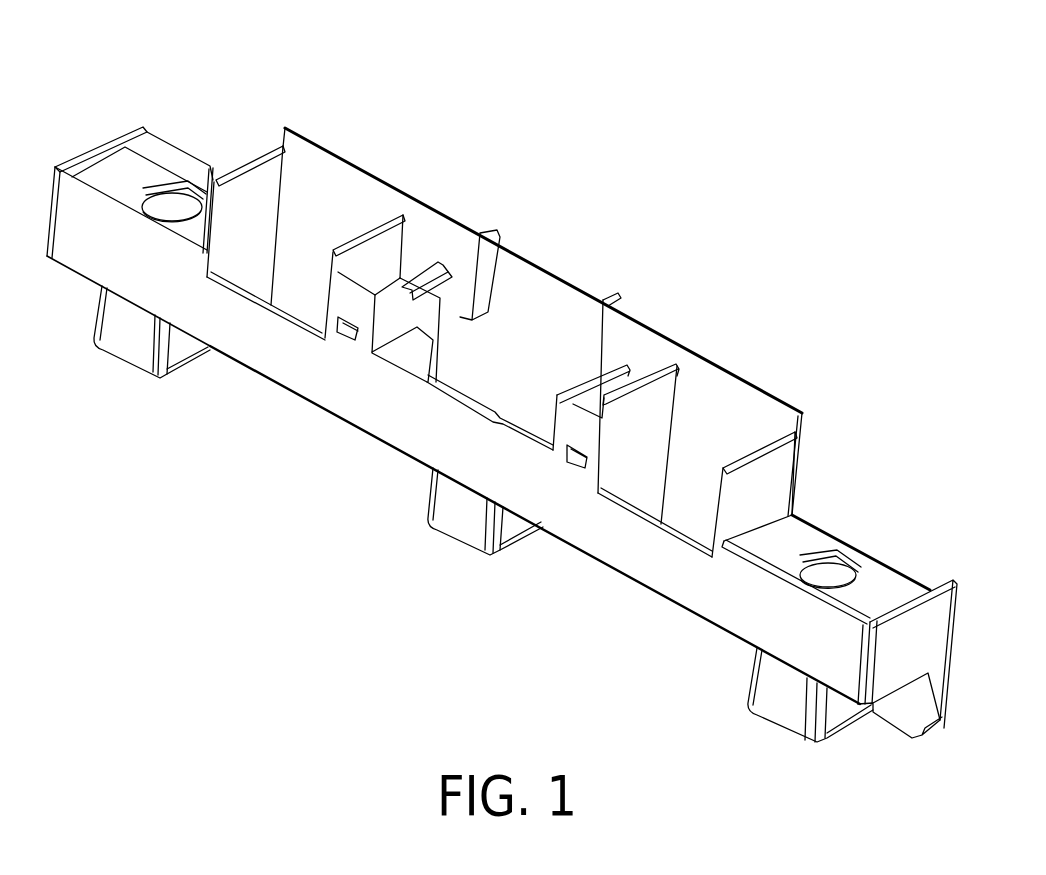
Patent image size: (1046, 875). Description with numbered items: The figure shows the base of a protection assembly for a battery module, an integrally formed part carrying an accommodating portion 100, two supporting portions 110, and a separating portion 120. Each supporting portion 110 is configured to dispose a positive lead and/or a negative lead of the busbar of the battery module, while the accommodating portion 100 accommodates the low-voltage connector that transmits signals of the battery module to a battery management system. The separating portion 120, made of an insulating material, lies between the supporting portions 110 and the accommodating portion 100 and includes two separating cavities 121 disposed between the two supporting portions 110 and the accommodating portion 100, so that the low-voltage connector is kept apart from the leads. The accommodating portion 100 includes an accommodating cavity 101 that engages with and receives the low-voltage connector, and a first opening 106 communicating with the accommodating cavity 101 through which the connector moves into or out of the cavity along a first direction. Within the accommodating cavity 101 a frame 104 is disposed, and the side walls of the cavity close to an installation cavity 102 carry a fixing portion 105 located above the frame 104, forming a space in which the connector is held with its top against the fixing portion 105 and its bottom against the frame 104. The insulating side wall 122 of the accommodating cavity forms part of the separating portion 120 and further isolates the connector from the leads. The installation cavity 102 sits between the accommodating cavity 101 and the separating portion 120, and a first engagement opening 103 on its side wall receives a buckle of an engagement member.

The accommodating portion 100 is at (680, 60).
The accommodating cavity 101 is at (477, 358).
The installation cavity 102 is at (395, 273).
The first engagement opening 103 is at (578, 470).
The frame 104 is at (400, 320).
The fixing portion 105 is at (443, 300).
The first opening 106 is at (505, 470).
The supporting portion 110 is at (150, 185).
The separating portion 120 is at (215, 452).
The separating cavity 121 is at (300, 278).
The side wall of the accommodating cavity 122 is at (367, 348).